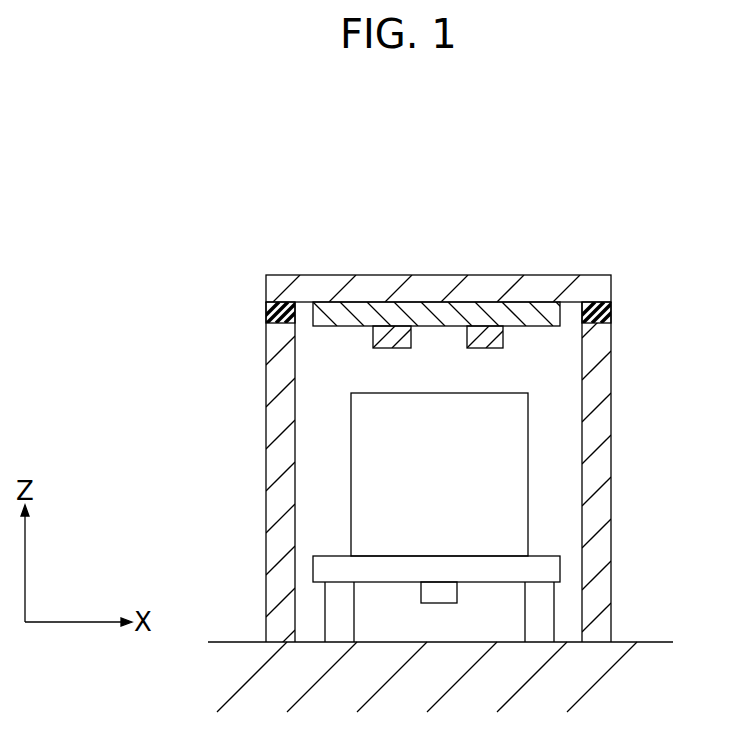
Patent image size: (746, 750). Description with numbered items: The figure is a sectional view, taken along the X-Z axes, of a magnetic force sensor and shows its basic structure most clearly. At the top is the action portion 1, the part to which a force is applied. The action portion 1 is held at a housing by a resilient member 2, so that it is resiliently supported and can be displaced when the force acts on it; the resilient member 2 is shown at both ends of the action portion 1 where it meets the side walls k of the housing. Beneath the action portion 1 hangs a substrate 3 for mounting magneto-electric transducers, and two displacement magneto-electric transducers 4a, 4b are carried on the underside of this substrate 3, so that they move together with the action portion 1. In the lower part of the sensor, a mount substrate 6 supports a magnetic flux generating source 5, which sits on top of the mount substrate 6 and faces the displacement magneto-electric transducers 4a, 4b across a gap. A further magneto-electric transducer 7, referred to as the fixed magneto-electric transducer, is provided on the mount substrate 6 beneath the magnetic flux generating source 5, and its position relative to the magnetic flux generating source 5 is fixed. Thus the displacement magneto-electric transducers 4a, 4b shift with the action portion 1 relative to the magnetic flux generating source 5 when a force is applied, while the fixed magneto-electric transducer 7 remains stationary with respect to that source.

The action portion 1 is at (482, 286).
The resilient member 2 is at (268, 315).
The substrate 3 is at (417, 313).
The magneto-electric transducer 4a is at (380, 345).
The magneto-electric transducer 4b is at (492, 337).
The magnetic flux generating source 5 is at (512, 477).
The mount substrate 6 is at (550, 571).
The fixed magneto-electric transducer 7 is at (436, 593).
The chamber wall k is at (281, 430).